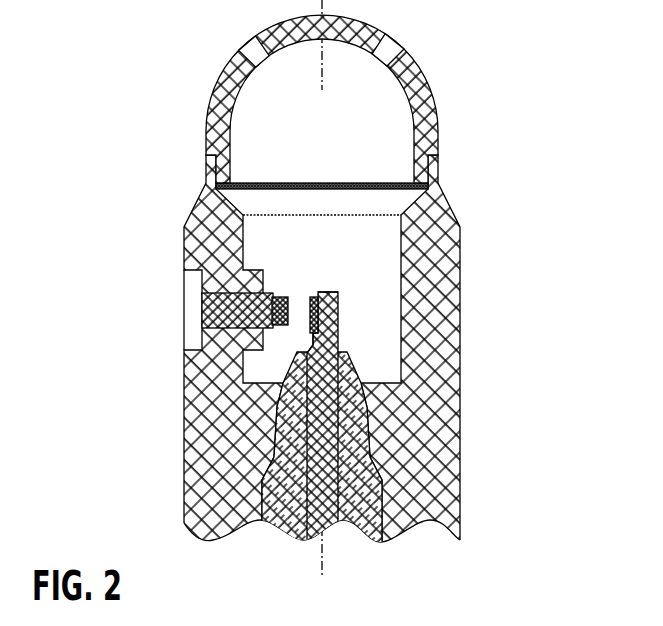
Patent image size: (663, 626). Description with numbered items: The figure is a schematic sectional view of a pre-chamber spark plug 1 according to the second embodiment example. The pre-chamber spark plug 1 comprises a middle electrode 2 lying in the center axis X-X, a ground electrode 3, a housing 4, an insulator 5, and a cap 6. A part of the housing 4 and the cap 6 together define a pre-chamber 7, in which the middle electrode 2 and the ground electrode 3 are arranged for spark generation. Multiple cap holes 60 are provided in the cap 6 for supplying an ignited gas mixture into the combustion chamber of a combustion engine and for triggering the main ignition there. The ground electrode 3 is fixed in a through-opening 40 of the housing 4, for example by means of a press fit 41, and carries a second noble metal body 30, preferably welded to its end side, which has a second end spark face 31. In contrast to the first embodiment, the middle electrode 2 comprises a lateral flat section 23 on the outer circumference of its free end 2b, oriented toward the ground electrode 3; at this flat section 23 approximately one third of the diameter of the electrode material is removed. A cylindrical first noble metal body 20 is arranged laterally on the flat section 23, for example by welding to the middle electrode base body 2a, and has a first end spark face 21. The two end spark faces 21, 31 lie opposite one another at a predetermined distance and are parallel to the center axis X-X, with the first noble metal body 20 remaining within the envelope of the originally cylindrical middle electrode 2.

The pre-chamber spark plug 1 is at (130, 62).
The middle electrode 2 is at (325, 389).
The middle electrode base body 2a is at (336, 468).
The free end 2b is at (297, 333).
The first noble metal body 20 is at (314, 322).
The first end spark face 21 is at (337, 288).
The flat section 23 is at (307, 336).
The ground electrode 3 is at (202, 334).
The second noble metal body 30 is at (282, 294).
The second end spark face 31 is at (298, 330).
The housing 4 is at (418, 427).
The through-opening 40 is at (297, 311).
The press fit 41 is at (238, 328).
The insulator 5 is at (287, 495).
The cap 6 is at (430, 78).
The cap holes 60 is at (252, 50).
The pre-chamber 7 is at (368, 145).